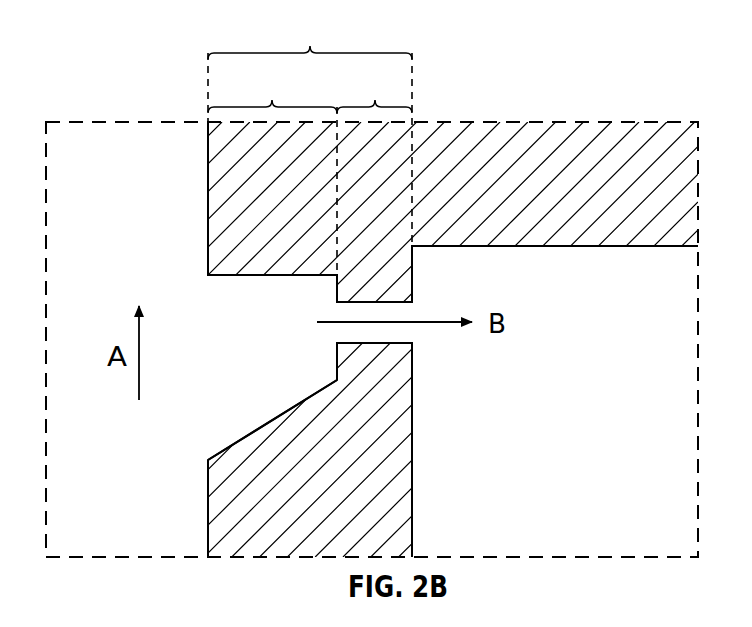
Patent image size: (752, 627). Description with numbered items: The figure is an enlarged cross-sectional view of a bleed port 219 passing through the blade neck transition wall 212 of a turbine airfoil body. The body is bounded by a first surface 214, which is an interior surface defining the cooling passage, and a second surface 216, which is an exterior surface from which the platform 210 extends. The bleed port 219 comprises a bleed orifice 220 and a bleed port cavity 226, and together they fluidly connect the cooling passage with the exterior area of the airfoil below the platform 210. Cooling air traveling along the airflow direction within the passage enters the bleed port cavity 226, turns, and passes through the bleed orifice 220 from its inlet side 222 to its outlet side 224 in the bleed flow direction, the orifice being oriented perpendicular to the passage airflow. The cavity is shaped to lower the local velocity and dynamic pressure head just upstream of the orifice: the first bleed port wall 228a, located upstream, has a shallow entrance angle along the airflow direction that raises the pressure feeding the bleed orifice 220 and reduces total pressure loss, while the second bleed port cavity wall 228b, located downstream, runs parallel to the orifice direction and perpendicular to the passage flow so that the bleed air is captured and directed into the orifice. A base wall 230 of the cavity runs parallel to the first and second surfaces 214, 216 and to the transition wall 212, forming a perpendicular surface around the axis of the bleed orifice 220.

The platform 210 is at (558, 247).
The blade neck transition wall 212 is at (398, 453).
The first surface 214 is at (208, 198).
The second surface 216 is at (412, 403).
The bleed port 219 is at (310, 37).
The bleed orifice 220 is at (458, 354).
The inlet side 222 is at (324, 335).
The outlet side 224 is at (416, 310).
The bleed port cavity 226 is at (303, 314).
The first bleed port wall 228a is at (298, 405).
The second bleed port cavity wall 228b is at (267, 275).
The base wall 230 is at (340, 283).